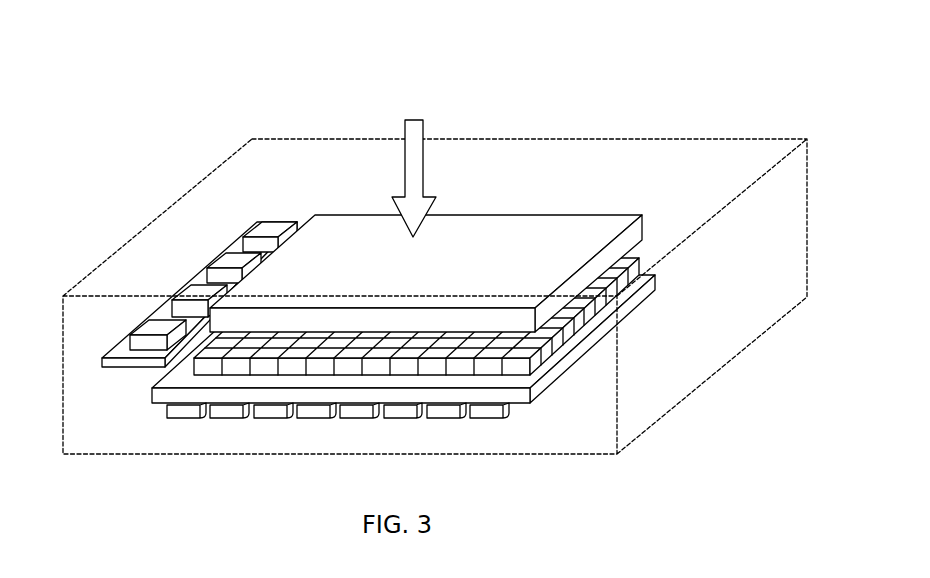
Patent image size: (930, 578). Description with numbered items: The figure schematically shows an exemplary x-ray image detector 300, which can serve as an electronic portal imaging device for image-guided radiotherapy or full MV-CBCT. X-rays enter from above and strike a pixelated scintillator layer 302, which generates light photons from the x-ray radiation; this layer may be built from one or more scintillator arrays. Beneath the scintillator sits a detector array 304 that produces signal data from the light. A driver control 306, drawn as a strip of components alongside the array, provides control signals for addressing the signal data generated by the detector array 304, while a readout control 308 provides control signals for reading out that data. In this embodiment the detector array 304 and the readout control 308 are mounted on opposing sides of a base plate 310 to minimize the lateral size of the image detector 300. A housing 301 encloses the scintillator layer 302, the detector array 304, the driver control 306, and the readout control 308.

The x-ray image detector 300 is at (112, 177).
The housing 301 is at (767, 138).
The pixelated scintillator layer 302 is at (540, 214).
The detector array 304 is at (641, 258).
The driver control 306 is at (202, 276).
The readout control 308 is at (163, 408).
The base plate 310 is at (150, 397).